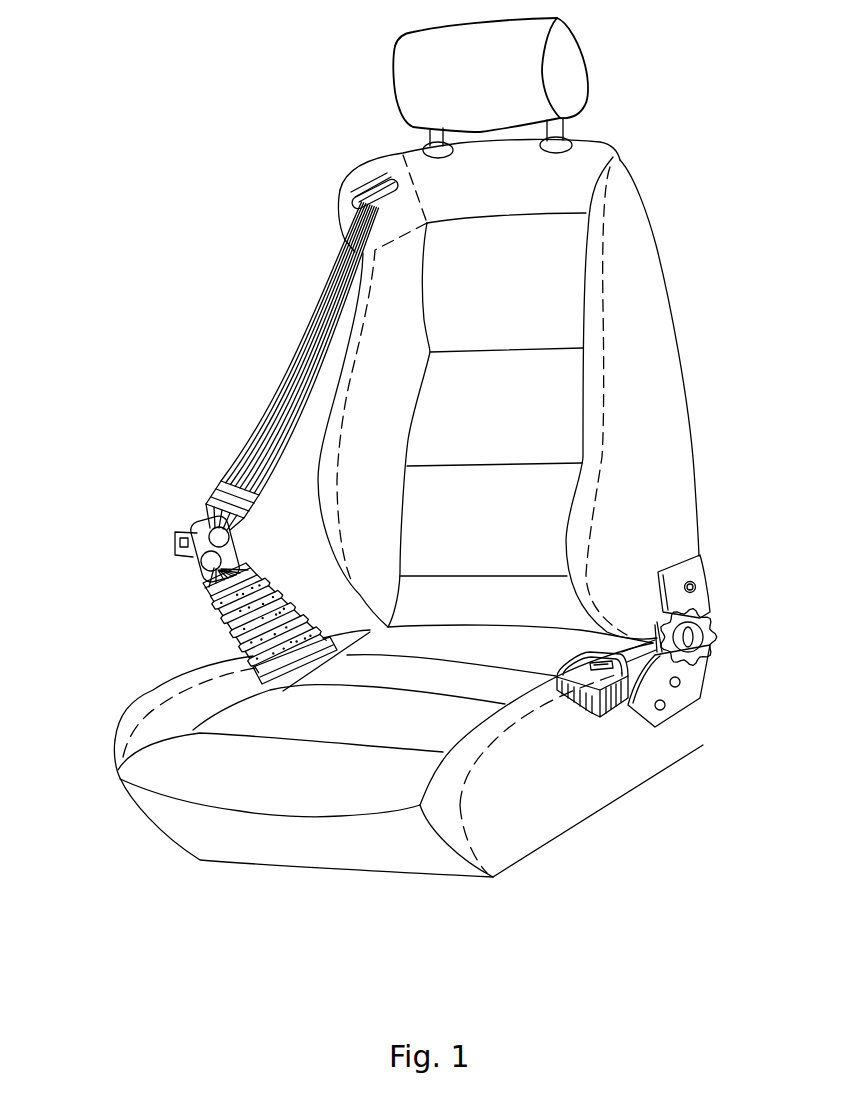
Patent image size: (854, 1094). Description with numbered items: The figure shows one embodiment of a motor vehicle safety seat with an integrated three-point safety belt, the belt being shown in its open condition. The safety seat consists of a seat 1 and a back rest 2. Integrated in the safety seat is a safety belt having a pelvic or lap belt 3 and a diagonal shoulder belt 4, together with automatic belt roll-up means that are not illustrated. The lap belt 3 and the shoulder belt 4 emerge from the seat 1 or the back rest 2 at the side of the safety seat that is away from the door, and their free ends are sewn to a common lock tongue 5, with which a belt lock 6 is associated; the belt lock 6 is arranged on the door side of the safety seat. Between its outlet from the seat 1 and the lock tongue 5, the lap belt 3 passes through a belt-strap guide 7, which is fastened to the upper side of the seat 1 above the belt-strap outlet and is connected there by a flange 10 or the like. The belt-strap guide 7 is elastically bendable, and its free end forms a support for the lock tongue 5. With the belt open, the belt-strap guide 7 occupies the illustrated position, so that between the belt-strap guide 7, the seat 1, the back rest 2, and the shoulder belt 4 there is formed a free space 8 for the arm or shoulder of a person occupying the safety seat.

The seat 1 is at (578, 765).
The back rest 2 is at (652, 398).
The lap belt 3 is at (205, 590).
The shoulder belt 4 is at (260, 435).
The lock tongue 5 is at (173, 543).
The belt lock 6 is at (605, 712).
The belt-strap guide 7 is at (240, 638).
The free space 8 is at (220, 485).
The flange 10 is at (190, 685).